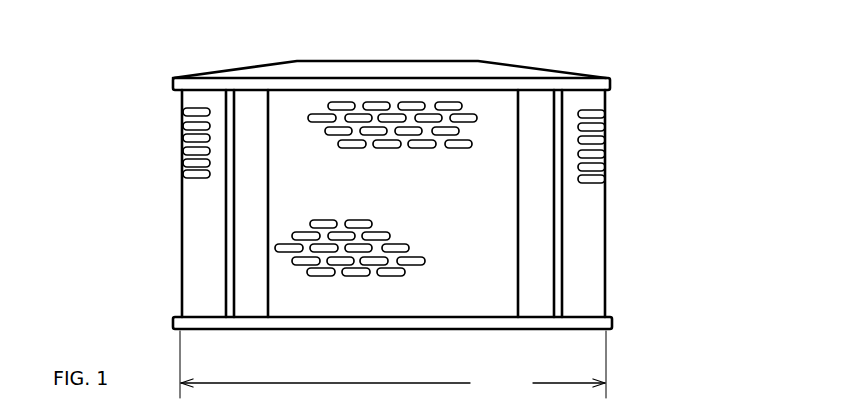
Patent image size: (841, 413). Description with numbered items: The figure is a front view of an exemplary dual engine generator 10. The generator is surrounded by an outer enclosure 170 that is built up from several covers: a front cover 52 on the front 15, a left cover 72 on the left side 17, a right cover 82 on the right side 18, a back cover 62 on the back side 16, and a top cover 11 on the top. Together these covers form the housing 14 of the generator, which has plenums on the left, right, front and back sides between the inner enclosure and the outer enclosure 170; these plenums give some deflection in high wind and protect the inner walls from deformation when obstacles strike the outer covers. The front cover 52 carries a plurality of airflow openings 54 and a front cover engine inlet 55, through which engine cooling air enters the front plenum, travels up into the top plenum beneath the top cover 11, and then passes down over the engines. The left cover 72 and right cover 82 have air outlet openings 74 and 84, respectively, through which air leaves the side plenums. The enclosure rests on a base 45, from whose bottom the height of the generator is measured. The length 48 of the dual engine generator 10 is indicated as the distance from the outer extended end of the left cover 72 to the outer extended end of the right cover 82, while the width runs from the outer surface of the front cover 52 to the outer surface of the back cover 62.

The dual engine generator 10 is at (171, 70).
The top cover 11 is at (543, 69).
The housing 14 is at (612, 80).
The front 15 is at (440, 270).
The back side 16 is at (460, 406).
The left side 17 is at (208, 240).
The right side 18 is at (587, 223).
The base 45 is at (175, 320).
The length 48 is at (393, 364).
The front cover 52 is at (283, 287).
The airflow openings 54 is at (333, 266).
The front cover engine inlet 55 is at (340, 107).
The back cover 62 is at (505, 406).
The left cover 72 is at (192, 208).
The air outlet openings 74 is at (137, 116).
The right cover 82 is at (600, 258).
The air outlet openings 84 is at (600, 139).
The outer enclosure 170 is at (215, 123).